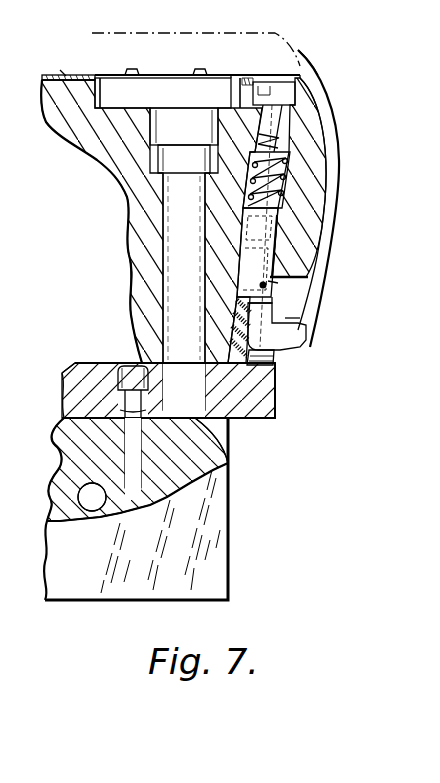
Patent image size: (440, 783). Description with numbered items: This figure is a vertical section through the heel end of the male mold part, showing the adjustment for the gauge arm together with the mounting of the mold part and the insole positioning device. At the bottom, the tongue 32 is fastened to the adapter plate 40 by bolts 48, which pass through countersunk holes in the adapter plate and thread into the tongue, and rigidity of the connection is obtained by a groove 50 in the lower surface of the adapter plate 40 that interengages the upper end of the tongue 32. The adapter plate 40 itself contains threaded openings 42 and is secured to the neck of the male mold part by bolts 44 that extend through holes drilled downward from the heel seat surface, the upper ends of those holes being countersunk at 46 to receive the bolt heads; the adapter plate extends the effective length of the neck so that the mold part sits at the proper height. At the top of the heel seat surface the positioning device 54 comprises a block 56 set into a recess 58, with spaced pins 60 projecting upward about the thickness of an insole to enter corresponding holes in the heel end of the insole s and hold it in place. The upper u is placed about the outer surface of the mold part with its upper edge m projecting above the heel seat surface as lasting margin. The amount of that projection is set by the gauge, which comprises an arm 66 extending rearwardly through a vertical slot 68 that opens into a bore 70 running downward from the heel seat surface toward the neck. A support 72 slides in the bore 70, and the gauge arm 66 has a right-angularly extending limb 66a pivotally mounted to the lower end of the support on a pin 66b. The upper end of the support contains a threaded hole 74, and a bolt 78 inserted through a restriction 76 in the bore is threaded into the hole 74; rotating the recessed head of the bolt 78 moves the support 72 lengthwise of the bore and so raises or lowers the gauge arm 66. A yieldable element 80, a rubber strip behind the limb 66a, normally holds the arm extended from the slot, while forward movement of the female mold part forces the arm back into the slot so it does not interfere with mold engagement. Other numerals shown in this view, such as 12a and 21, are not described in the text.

The housing wall portion 12a is at (133, 328).
The passage 21 is at (82, 488).
The tongue 32 is at (226, 561).
The adapter plate 40 is at (270, 402).
The threaded openings 42 is at (226, 468).
The bolts 44 is at (165, 262).
The countersink 46 is at (162, 158).
The bolts 48 is at (96, 428).
The groove 50 is at (252, 422).
The positioning device 54 is at (180, 48).
The block 56 is at (113, 85).
The recess 58 is at (74, 77).
The pins 60 is at (214, 60).
The gauge arm 66 is at (310, 337).
The limb 66a is at (298, 317).
The pin 66b is at (277, 283).
The vertical slot 68 is at (295, 290).
The bore 70 is at (278, 234).
The support 72 is at (276, 255).
The threaded hole 74 is at (290, 207).
The restriction 76 is at (283, 122).
The bolt 78 is at (278, 138).
The yieldable element 80 is at (272, 366).
The upper edge / lasting margin m is at (260, 36).
The upper u is at (305, 64).
The insole S is at (60, 78).